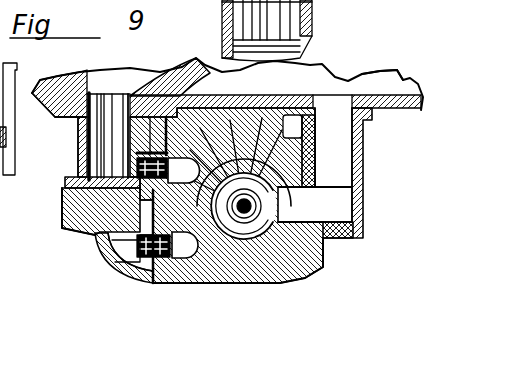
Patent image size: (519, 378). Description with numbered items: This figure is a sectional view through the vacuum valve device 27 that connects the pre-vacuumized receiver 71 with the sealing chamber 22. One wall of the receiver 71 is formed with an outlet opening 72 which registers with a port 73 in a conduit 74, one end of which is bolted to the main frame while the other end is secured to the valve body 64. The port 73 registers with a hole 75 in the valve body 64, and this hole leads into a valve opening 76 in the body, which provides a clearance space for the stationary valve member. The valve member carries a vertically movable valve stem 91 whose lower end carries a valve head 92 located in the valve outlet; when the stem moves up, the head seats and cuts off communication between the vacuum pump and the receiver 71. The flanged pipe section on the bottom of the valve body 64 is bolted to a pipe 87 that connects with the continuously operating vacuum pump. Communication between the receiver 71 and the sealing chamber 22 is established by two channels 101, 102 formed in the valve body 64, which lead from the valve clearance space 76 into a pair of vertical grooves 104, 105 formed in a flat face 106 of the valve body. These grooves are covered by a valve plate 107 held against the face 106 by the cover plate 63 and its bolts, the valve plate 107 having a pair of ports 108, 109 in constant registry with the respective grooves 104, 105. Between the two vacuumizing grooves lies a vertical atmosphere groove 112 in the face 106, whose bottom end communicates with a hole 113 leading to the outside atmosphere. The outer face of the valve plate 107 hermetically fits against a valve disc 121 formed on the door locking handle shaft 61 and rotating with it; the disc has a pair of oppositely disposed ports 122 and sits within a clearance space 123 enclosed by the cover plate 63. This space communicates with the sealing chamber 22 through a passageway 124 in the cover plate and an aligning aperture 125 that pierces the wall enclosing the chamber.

The sealing chamber 22 is at (98, 76).
The vacuum valve device 27 is at (404, 64).
The short shaft 61 is at (63, 223).
The cover plate 63 is at (129, 246).
The valve body 64 is at (278, 272).
The receiver 71 is at (379, 83).
The outlet opening 72 is at (336, 106).
The port 73 is at (340, 141).
The conduit 74 is at (363, 174).
The hole 75 is at (300, 209).
The valve opening 76 is at (240, 240).
The pipe 87 is at (313, 24).
The valve stem 91 is at (256, 205).
The valve head 92 is at (229, 228).
The channel 101 is at (205, 260).
The channel 102 is at (213, 160).
The vertical groove 104 is at (3, 158).
The vertical groove 105 is at (191, 157).
The flat face 106 is at (174, 120).
The valve plate 107 is at (158, 133).
The port 108 is at (154, 262).
The port 109 is at (127, 133).
The atmosphere groove 112 is at (93, 231).
The hole 113 is at (98, 243).
The valve disc 121 is at (84, 142).
The port 122 is at (87, 161).
The clearance space 123 is at (123, 238).
The passageway 124 is at (70, 183).
The aperture 125 is at (88, 100).